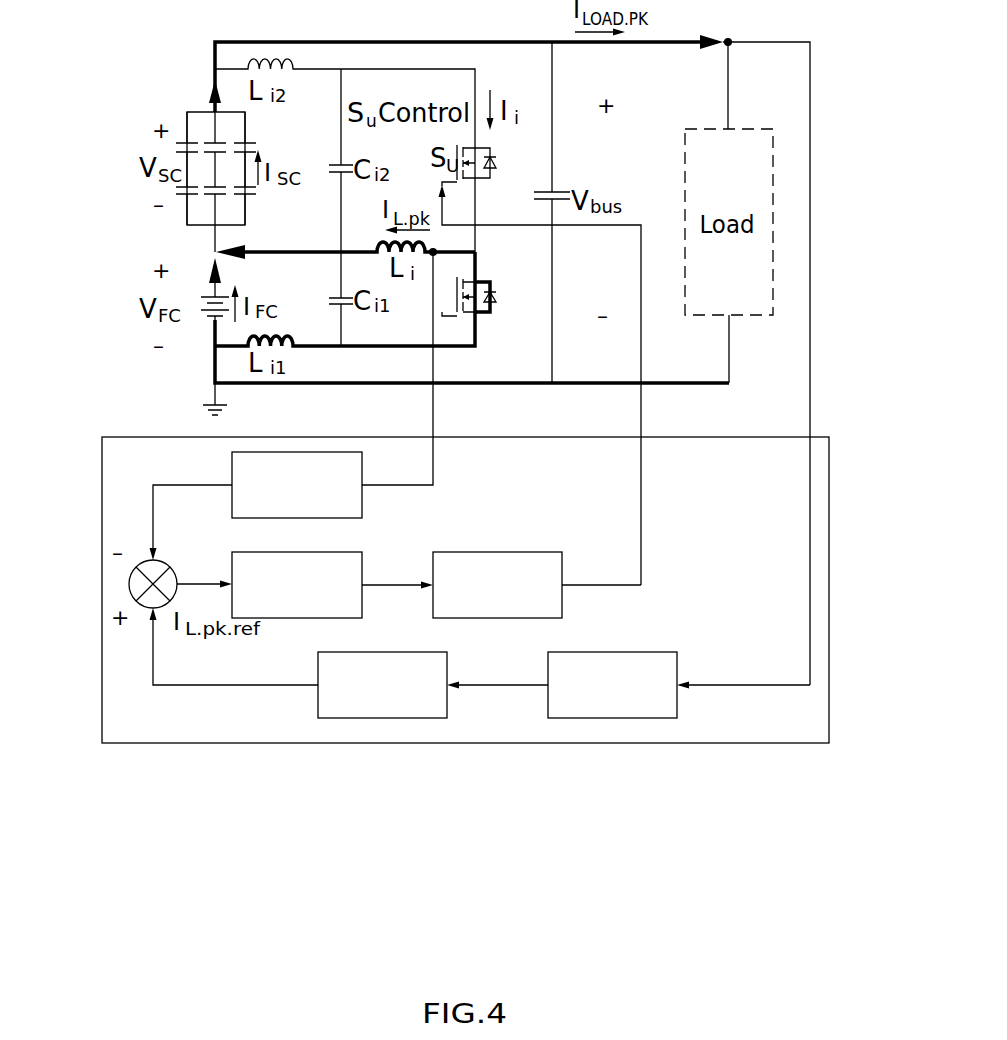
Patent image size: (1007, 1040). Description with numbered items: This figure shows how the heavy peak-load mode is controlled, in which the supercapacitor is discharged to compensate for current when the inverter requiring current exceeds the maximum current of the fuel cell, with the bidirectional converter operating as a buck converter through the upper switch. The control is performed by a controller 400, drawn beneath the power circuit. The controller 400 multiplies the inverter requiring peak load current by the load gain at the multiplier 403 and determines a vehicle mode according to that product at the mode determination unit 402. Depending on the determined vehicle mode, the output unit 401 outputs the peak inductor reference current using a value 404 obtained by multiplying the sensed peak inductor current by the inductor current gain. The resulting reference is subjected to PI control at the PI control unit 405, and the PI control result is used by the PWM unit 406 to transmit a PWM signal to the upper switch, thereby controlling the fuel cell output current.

The controller 400 is at (120, 437).
The I_L.PK.ref output unit 401 is at (129, 584).
The vehicle mode determination unit 402 is at (373, 652).
The K_LOAD multiplier 403 is at (613, 652).
The K_L.PK multiplied value 404 is at (297, 452).
The PI control unit 405 is at (362, 568).
The PWM signal transmitter 406 is at (523, 552).